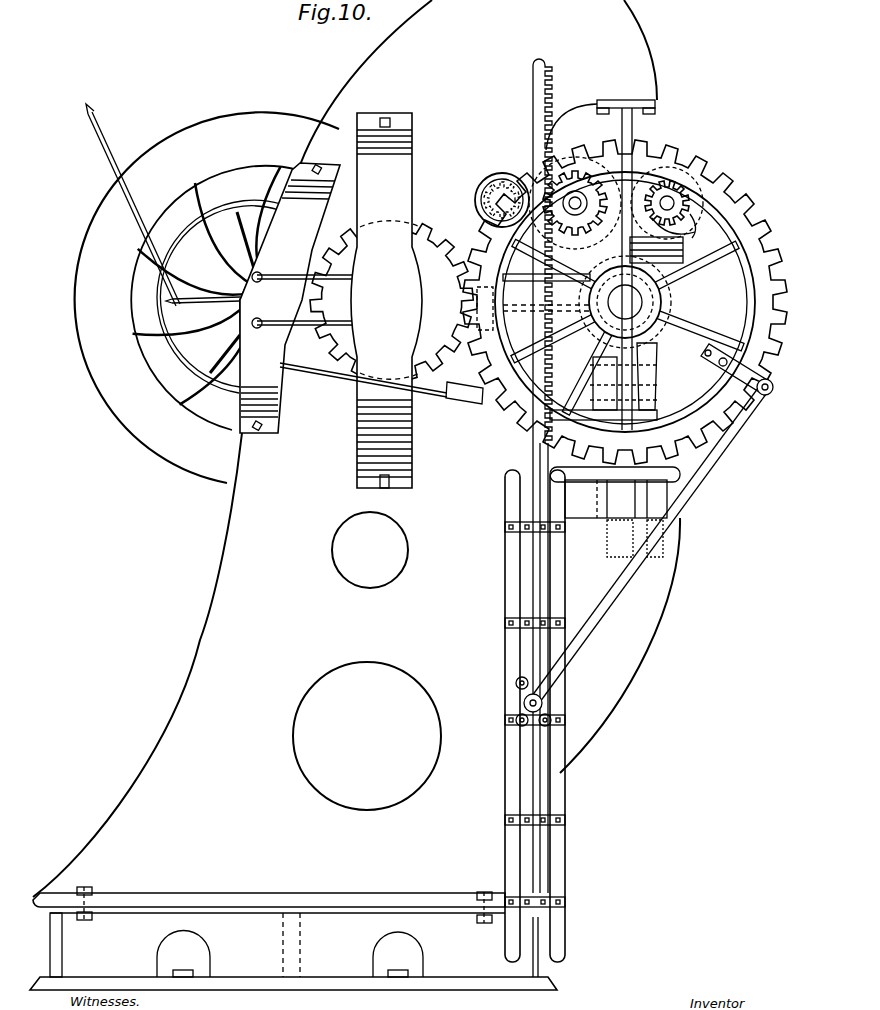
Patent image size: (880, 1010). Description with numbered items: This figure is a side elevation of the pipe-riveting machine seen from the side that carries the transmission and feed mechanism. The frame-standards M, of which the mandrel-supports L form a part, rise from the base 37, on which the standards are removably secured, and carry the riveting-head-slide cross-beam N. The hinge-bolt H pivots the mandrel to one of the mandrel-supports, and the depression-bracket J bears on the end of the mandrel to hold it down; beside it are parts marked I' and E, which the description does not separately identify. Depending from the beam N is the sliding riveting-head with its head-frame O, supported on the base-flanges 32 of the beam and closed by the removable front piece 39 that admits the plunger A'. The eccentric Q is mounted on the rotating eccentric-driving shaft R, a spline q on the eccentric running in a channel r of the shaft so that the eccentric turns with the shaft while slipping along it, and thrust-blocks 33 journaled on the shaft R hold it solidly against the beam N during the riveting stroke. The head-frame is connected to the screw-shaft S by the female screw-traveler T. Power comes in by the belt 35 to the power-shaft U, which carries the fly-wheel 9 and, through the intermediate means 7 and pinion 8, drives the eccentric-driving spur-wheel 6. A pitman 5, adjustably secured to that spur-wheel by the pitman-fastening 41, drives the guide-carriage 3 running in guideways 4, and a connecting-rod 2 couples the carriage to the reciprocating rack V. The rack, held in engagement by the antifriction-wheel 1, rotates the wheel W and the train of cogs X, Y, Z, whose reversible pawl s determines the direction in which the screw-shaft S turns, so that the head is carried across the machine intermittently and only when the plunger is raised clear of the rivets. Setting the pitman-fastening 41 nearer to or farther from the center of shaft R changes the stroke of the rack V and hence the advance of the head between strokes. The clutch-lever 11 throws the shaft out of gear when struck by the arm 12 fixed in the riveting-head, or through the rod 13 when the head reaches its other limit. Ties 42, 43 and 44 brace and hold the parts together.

The frame-standard M is at (345, 448).
The mandrel-support L is at (620, 645).
The base 37 is at (781, 236).
The fly-wheel 9 is at (207, 297).
The power-shaft U is at (237, 321).
The pinion 8 is at (226, 297).
The belt 35 is at (114, 167).
The tie 44 is at (321, 298).
The intermediate means 7 is at (433, 239).
The clutch-lever 11 is at (434, 398).
The eccentric-driving shaft R is at (625, 302).
The channel r is at (625, 302).
The riveting-head-slide cross-beam N is at (634, 133).
The cog-wheel X is at (577, 140).
The reciprocating rack V is at (533, 80).
The connecting-rod 2 is at (530, 458).
The antifriction-wheel 1 is at (506, 180).
The cog-wheel W is at (575, 205).
The screw-shaft S is at (705, 210).
The cog-wheel Y is at (655, 190).
The reversible pawl s is at (690, 203).
The cog-wheel Z is at (700, 226).
The female screw-traveler T is at (656, 250).
The base-flange 32 is at (650, 256).
The thrust-block 33 is at (665, 280).
The eccentric-driving spur-wheel 6 is at (770, 272).
The head-frame O is at (730, 292).
The eccentric Q is at (668, 300).
The spline q is at (660, 312).
The tie 42 is at (555, 278).
The tie 43 is at (555, 304).
The arm 12 is at (597, 396).
The rod 13 is at (598, 388).
The removable front piece 39 is at (640, 386).
The plunger A' is at (617, 408).
The pitman-fastening 41 is at (736, 368).
The pitman 5 is at (688, 500).
The guide-carriage 3 is at (524, 707).
The depression-bracket J is at (680, 475).
The box I' is at (616, 499).
The box E is at (631, 499).
The hinge-bolt H is at (610, 552).
The guideway 4 is at (505, 598).